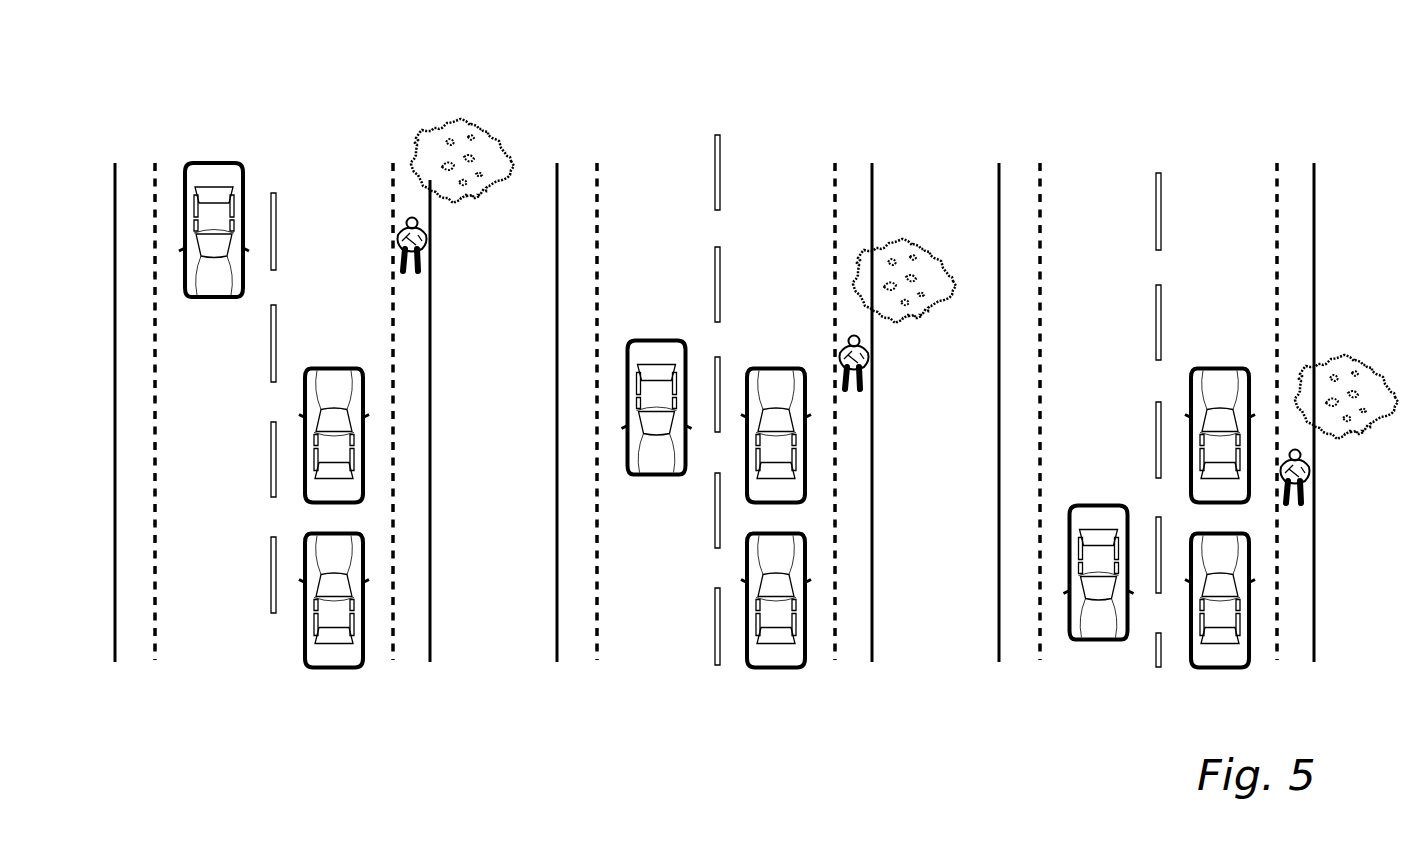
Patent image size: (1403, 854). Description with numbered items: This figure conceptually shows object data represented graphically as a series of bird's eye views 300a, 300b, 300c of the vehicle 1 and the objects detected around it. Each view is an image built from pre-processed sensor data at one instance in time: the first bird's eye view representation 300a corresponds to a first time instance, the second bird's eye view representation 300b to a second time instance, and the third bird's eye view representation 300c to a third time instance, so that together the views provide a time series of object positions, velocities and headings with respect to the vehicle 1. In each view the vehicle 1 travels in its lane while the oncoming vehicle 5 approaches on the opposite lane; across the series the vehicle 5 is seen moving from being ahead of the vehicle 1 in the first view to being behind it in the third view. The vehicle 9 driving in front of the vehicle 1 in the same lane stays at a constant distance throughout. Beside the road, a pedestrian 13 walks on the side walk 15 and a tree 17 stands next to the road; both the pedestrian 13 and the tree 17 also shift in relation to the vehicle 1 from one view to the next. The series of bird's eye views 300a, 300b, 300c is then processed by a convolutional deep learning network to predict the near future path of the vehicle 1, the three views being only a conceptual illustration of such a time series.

The vehicle 1 is at (337, 668).
The oncoming vehicle 5 is at (217, 298).
The vehicle driving in front 9 is at (337, 368).
The pedestrian 13 is at (428, 232).
The side walk 15 is at (405, 205).
The tree 17 is at (484, 130).
The first bird's eye view representation 300a is at (182, 140).
The second bird's eye view representation 300b is at (622, 140).
The third bird's eye view representation 300c is at (1058, 140).